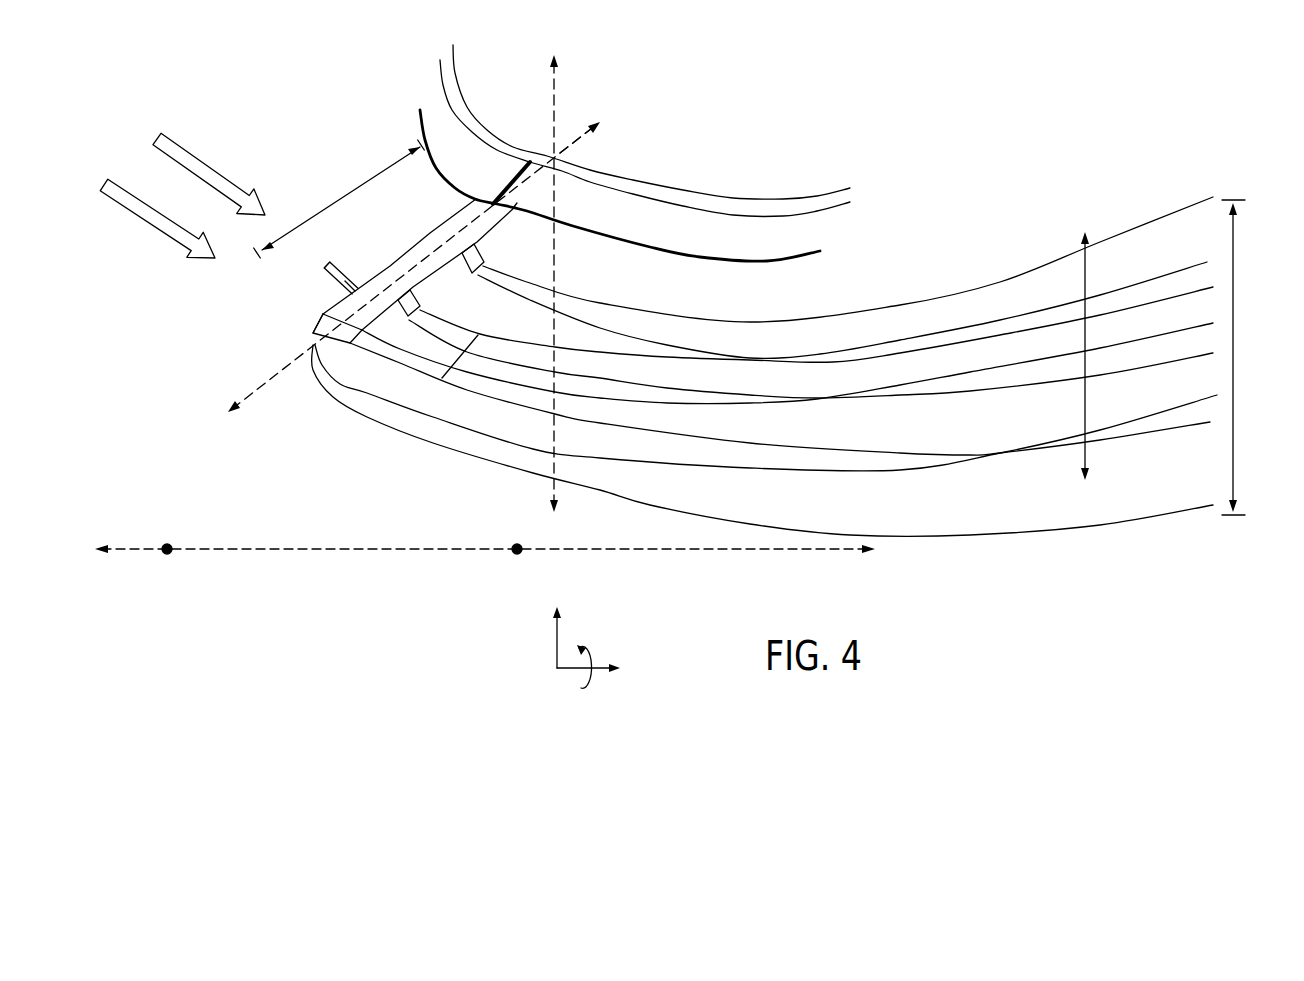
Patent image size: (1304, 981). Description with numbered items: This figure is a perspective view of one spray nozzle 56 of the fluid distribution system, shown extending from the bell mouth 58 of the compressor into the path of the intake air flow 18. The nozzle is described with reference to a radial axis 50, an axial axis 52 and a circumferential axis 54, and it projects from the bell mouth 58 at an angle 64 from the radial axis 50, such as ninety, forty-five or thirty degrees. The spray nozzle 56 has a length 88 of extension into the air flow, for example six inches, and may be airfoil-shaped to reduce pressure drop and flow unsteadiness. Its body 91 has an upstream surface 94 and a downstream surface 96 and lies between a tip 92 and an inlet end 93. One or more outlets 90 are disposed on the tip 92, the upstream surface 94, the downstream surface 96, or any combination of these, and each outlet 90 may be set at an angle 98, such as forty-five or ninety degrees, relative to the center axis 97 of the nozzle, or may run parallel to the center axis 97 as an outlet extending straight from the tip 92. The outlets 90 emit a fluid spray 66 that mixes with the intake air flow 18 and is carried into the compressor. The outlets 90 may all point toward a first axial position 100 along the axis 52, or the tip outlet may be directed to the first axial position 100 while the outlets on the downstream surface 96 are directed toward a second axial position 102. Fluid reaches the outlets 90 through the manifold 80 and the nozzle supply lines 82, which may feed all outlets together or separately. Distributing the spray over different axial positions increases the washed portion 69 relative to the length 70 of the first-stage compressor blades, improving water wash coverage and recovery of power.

The intake air flow 18 is at (188, 143).
The radial axis 50 is at (553, 467).
The axial axis 52 is at (300, 552).
The circumferential axis 54 is at (577, 682).
The spray nozzle 56 is at (430, 234).
The bell mouth 58 is at (763, 261).
The angle 64 is at (555, 281).
The fluid spray 66 is at (600, 303).
The washed portion 69 is at (1082, 275).
The length of the compressor blades 70 is at (1236, 245).
The manifold 80 is at (694, 193).
The nozzle supply line 82 is at (511, 178).
The length 88 is at (370, 176).
The outlet 90 is at (324, 270).
The body 91 is at (389, 267).
The tip 92 is at (314, 324).
The inlet end 93 is at (521, 202).
The upstream surface 94 is at (447, 208).
The downstream surface 96 is at (421, 302).
The center axis 97 is at (581, 137).
The angle 98 is at (341, 288).
The first axial position 100 is at (165, 545).
The second axial position 102 is at (516, 552).